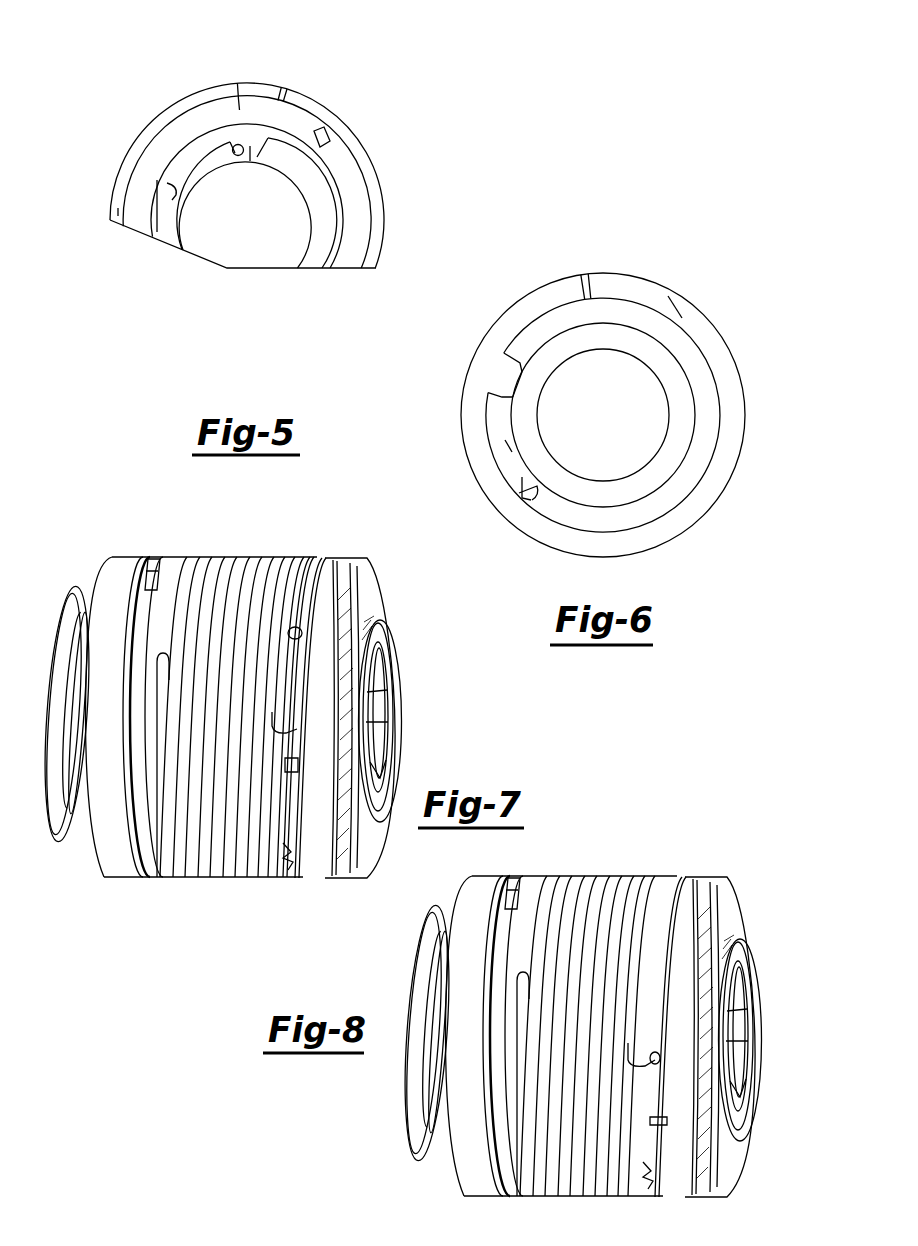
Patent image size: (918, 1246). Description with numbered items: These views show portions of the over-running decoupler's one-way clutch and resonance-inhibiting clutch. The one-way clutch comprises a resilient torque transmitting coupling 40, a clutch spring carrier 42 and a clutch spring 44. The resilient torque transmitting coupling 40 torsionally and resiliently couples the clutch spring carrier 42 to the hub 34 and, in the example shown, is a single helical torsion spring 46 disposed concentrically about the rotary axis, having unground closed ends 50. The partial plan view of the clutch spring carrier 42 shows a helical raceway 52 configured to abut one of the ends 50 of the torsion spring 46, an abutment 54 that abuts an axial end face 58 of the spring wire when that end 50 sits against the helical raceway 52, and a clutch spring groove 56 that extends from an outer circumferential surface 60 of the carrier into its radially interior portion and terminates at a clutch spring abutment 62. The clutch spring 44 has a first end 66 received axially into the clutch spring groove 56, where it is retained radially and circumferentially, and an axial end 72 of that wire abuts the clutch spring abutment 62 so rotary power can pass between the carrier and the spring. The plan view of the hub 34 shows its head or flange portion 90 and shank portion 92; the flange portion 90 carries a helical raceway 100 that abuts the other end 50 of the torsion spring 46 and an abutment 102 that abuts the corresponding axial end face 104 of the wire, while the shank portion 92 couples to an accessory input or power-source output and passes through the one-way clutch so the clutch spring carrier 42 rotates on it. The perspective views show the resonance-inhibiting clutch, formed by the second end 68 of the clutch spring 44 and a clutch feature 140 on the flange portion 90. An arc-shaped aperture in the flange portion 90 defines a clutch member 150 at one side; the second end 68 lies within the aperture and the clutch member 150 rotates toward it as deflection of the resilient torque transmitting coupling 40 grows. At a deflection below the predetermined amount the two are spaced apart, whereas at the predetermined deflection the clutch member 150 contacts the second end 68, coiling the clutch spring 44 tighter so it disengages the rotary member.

In FIG. 6, the hub 34 is at (722, 316).
In FIG. 5, the resilient torque transmitting coupling 40 is at (180, 200).
In FIG. 7, the resilient torque transmitting coupling 40 is at (296, 870).
In FIG. 5, the clutch spring carrier 42 is at (383, 173).
In FIG. 5, the clutch spring 44 is at (173, 130).
In FIG. 7, the clutch spring 44 is at (221, 893).
In FIG. 8, the clutch spring 44 is at (623, 862).
In FIG. 6, the helical torsion spring 46 is at (522, 497).
In FIG. 5, the closed ends 50 is at (185, 175).
In FIG. 6, the closed ends 50 is at (507, 447).
In FIG. 5, the helical raceway 52 is at (320, 253).
In FIG. 5, the abutment 54 is at (248, 154).
In FIG. 5, the clutch spring groove 56 is at (284, 86).
In FIG. 5, the axial end face 58 is at (117, 212).
In FIG. 5, the outer circumferential surface 60 is at (385, 223).
In FIG. 5, the clutch spring abutment 62 is at (333, 160).
In FIG. 5, the first end 66 is at (235, 83).
In FIG. 7, the second end 68 is at (282, 731).
In FIG. 8, the second end 68 is at (648, 1067).
In FIG. 5, the axial end 72 is at (322, 128).
In FIG. 6, the flange portion 90 is at (745, 430).
In FIG. 6, the shank portion 92 is at (568, 430).
In FIG. 6, the helical raceway 100 is at (702, 395).
In FIG. 6, the abutment 102 is at (507, 375).
In FIG. 6, the axial end face 104 is at (490, 388).
In FIG. 6, the clutch feature 140 is at (650, 274).
In FIG. 7, the clutch feature 140 is at (293, 672).
In FIG. 8, the clutch feature 140 is at (655, 1118).
In FIG. 6, the clutch member 150 is at (595, 272).
In FIG. 7, the clutch member 150 is at (303, 634).
In FIG. 8, the clutch member 150 is at (653, 1056).